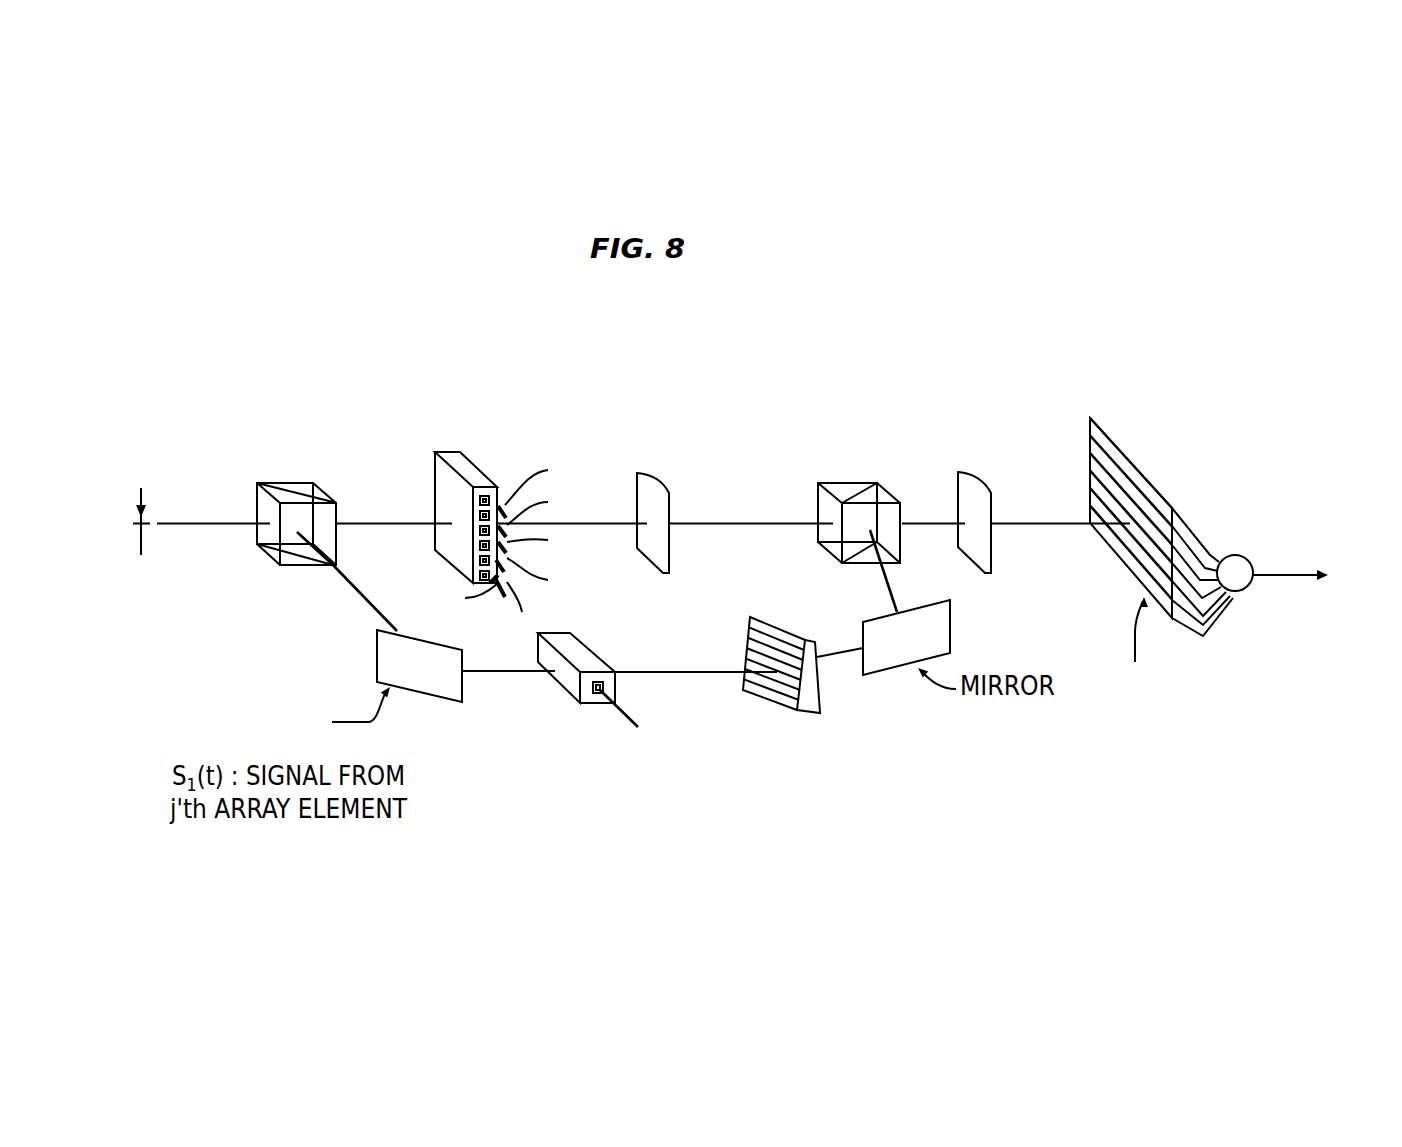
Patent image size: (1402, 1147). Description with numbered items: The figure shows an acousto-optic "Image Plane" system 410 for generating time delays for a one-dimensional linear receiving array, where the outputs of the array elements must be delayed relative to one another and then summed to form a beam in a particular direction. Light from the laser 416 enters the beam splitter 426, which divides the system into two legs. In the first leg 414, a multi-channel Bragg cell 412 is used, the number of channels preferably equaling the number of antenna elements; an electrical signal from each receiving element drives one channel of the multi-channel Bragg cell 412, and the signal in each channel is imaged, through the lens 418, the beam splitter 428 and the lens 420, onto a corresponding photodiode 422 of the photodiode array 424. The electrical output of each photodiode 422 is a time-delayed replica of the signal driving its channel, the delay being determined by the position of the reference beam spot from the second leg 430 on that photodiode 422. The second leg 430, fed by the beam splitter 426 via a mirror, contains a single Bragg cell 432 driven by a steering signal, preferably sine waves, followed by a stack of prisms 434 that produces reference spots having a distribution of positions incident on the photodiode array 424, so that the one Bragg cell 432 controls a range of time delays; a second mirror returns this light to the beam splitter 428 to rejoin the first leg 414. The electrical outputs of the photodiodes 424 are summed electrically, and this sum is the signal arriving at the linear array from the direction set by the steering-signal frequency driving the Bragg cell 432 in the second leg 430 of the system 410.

The acousto-optic image plane system 410 is at (275, 338).
The multi-channel Bragg cell 412 is at (440, 470).
The first leg 414 is at (357, 522).
The laser 416 is at (140, 488).
The lens 418 is at (663, 480).
The lens 420 is at (978, 478).
The photodiode 422 is at (1070, 440).
The photodiode array 424 is at (1140, 468).
The beam splitter 426 is at (262, 556).
The beam splitter 428 is at (833, 472).
The second leg 430 is at (338, 599).
The Bragg cell 432 is at (634, 685).
The stack of prisms 434 is at (786, 720).